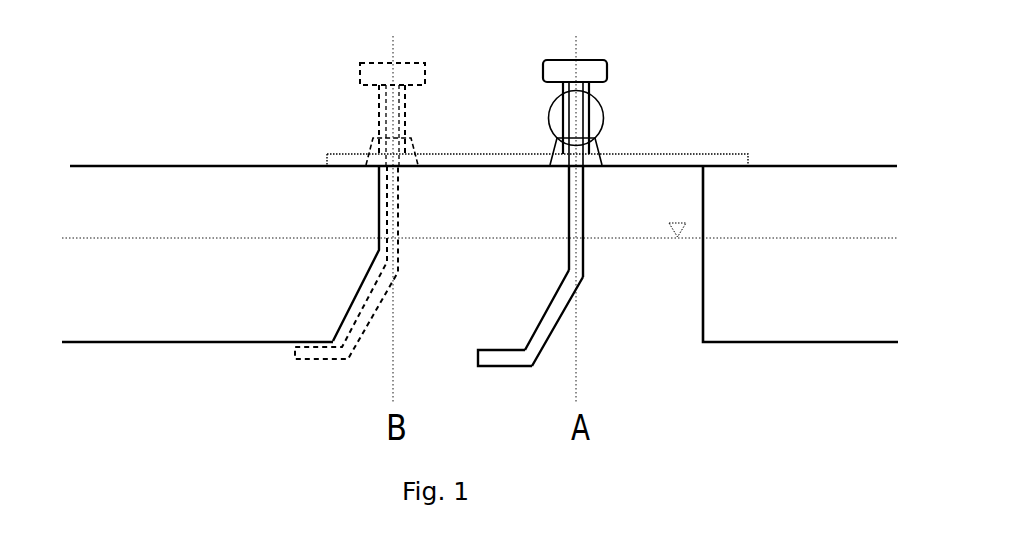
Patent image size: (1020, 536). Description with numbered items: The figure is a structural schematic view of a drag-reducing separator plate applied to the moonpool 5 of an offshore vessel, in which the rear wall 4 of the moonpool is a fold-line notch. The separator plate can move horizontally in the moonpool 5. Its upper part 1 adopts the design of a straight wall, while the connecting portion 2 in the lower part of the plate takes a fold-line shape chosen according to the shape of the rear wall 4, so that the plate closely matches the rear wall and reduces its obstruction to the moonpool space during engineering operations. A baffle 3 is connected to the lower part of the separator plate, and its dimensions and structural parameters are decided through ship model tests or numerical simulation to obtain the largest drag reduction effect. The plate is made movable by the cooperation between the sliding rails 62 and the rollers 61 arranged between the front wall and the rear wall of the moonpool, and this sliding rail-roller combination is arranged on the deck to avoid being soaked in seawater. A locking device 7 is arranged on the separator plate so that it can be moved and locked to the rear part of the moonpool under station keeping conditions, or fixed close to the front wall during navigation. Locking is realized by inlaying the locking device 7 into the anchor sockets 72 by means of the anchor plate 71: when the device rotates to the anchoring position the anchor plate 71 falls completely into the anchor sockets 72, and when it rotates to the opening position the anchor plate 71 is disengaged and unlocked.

The upper part 1 is at (596, 181).
The connecting portion 2 is at (571, 310).
The baffle 3 is at (492, 347).
The rear wall 4 is at (342, 317).
The moonpool 5 is at (502, 232).
The rollers 61 is at (547, 123).
The sliding rails 62 is at (452, 152).
The locking device 7 is at (633, 102).
The anchor plate 71 is at (364, 64).
The anchor sockets 72 is at (365, 142).